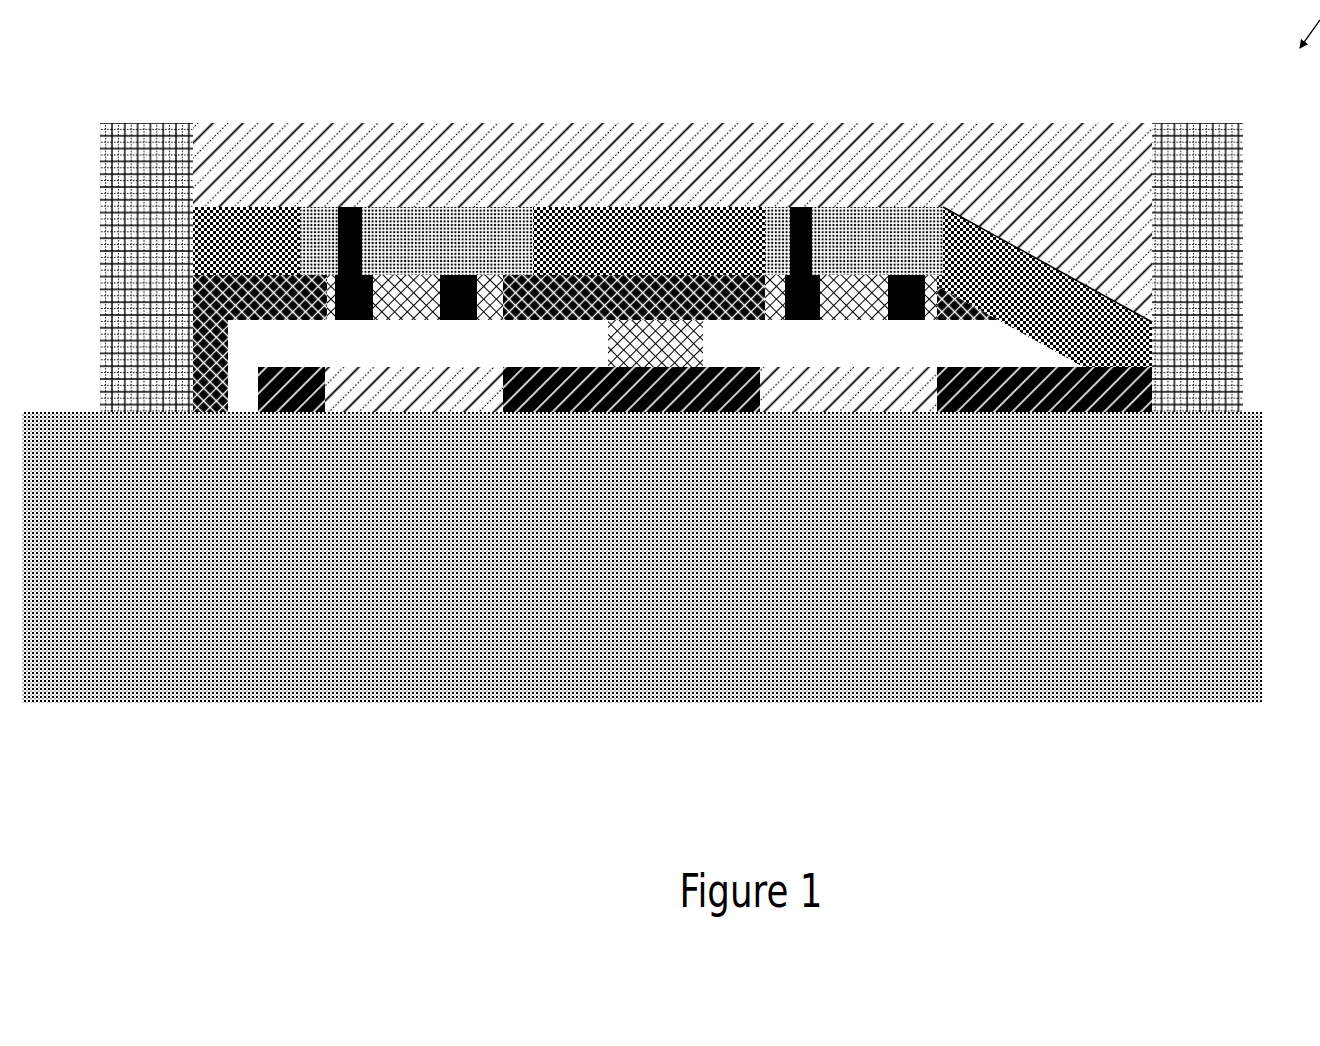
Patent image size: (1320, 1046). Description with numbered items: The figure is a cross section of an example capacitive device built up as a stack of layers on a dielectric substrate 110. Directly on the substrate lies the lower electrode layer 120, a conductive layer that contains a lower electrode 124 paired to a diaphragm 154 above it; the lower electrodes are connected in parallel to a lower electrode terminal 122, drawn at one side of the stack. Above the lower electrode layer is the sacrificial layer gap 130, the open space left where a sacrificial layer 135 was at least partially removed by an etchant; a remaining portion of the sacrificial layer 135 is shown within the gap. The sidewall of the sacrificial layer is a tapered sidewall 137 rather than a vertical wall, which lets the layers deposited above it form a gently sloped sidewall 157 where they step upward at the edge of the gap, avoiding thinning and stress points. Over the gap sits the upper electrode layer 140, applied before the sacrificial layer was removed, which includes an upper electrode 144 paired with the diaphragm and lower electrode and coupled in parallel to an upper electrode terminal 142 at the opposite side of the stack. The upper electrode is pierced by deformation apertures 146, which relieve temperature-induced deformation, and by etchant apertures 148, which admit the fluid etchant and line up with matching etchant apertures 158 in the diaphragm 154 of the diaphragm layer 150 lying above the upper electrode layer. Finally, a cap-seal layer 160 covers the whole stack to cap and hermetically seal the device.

The dielectric substrate 110 is at (1217, 691).
The lower electrode layer 120 is at (642, 400).
The lower electrode terminal 122 is at (1181, 309).
The lower electrode 124 is at (399, 400).
The sacrificial layer gap 130 is at (399, 355).
The sacrificial layer 135 is at (642, 355).
The tapered sidewall 137 is at (1043, 332).
The upper electrode layer 140 is at (642, 310).
The upper electrode terminal 142 is at (131, 309).
The upper electrode 144 is at (399, 310).
The deformation aperture 146 is at (481, 278).
The etchant aperture 148 is at (337, 279).
The diaphragm layer 150 is at (642, 257).
The diaphragm 154 is at (399, 257).
The sloped sidewall 157 is at (1042, 252).
The etchant aperture 158 is at (337, 216).
The cap-seal layer 160 is at (1084, 164).